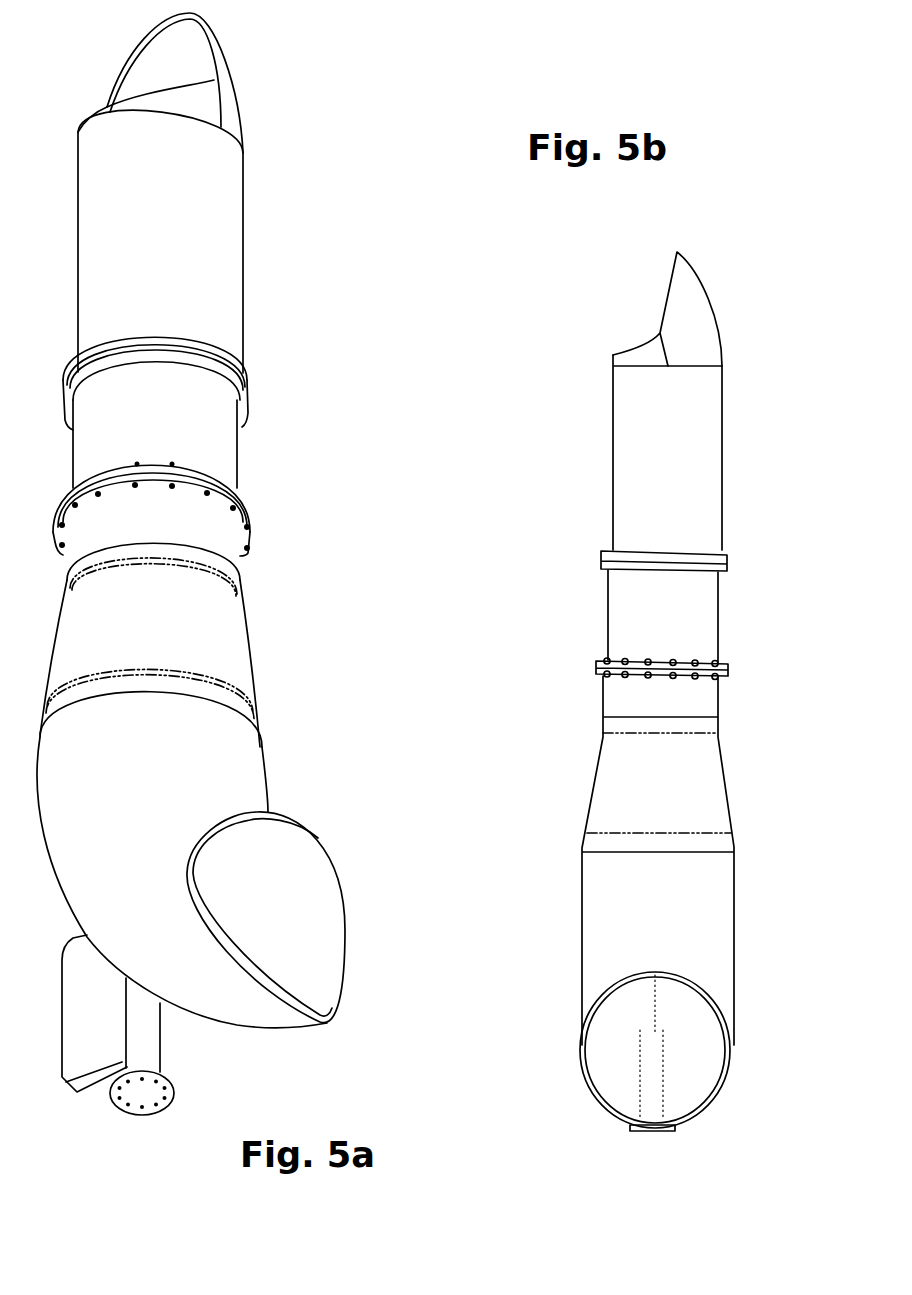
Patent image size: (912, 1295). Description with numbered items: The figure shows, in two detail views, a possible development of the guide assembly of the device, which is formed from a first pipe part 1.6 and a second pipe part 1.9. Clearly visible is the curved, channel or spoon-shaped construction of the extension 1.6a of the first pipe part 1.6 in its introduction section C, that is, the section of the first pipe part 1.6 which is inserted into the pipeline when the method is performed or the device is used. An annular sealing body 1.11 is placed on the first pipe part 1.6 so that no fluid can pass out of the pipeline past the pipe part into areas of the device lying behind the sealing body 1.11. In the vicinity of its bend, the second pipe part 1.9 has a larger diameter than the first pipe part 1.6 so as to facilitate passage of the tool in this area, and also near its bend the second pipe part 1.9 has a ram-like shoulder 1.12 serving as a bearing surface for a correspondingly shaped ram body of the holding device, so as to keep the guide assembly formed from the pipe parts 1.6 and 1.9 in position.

In FIG. 5A, the introduction section C is at (295, 122).
In FIG. 5B, the introduction section C is at (603, 332).
In FIG. 5A, the first pipe part 1.6 is at (255, 278).
In FIG. 5B, the first pipe part 1.6 is at (575, 423).
In FIG. 5A, the extension 1.6a is at (181, 62).
In FIG. 5B, the extension 1.6a is at (688, 304).
In FIG. 5A, the annular sealing body 1.11 is at (243, 414).
In FIG. 5B, the annular sealing body 1.11 is at (612, 566).
In FIG. 5A, the second pipe part 1.9 is at (212, 775).
In FIG. 5B, the second pipe part 1.9 is at (600, 906).
In FIG. 5A, the ram-like shoulder 1.12 is at (150, 1095).
In FIG. 5B, the ram-like shoulder 1.12 is at (647, 1088).